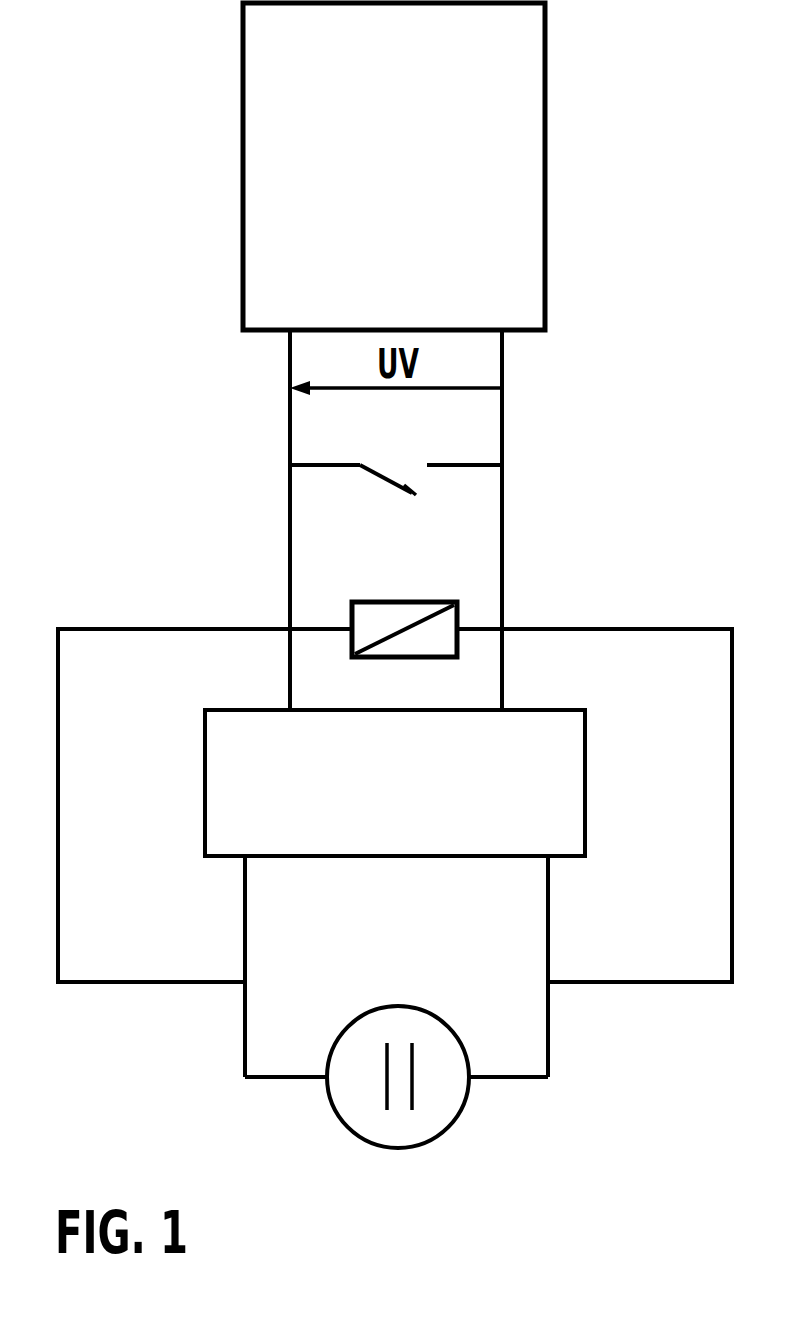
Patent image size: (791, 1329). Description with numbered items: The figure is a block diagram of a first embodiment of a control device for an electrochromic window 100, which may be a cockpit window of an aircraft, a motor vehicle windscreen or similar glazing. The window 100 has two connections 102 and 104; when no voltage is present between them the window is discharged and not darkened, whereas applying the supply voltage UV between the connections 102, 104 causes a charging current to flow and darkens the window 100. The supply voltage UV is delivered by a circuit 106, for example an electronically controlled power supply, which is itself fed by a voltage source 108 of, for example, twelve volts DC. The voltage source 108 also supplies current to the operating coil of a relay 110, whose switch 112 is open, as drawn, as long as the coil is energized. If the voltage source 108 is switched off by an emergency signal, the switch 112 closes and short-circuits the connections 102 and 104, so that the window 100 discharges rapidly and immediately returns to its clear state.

The electrochromic window 100 is at (545, 68).
The connection 102 is at (502, 360).
The connection 104 is at (290, 358).
The circuit 106 is at (560, 710).
The voltage source 108 is at (445, 1128).
The relay 110 is at (352, 602).
The switch 112 is at (402, 490).